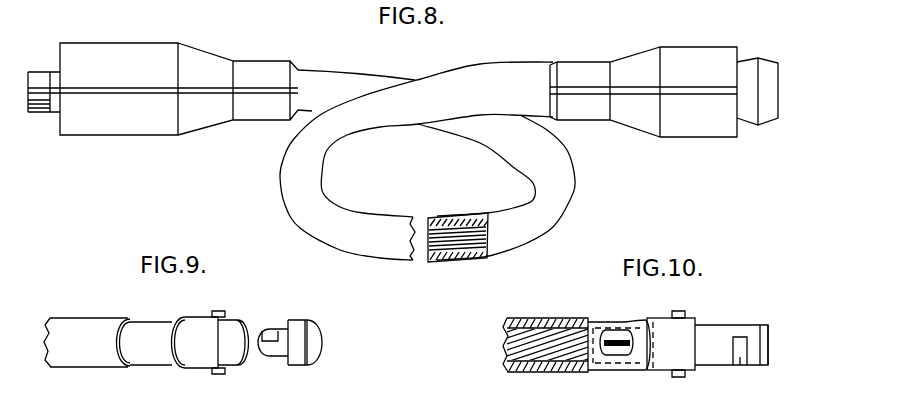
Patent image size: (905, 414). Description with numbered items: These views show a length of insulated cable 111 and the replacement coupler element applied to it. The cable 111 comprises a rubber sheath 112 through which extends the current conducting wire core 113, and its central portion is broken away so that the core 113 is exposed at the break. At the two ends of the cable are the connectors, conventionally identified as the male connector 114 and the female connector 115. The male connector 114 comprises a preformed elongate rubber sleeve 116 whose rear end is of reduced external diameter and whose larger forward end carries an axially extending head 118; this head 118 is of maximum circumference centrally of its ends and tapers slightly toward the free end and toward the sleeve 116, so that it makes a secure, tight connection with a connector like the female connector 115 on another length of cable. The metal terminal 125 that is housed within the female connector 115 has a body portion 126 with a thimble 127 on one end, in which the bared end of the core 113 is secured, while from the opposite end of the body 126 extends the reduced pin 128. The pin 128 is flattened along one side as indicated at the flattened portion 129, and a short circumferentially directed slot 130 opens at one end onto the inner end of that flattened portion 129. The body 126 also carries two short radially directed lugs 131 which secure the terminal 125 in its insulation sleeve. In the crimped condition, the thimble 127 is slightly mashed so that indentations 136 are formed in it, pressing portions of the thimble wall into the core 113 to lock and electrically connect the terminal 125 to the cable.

In FIG. 8, the insulated cable 111 is at (422, 75).
In FIG. 8, the rubber sheath 112 is at (293, 175).
In FIG. 9, the rubber sheath 112 is at (85, 333).
In FIG. 8, the current conducting wire core 113 is at (465, 262).
In FIG. 10, the current conducting wire core 113 is at (505, 345).
In FIG. 8, the male connector 114 is at (643, 96).
In FIG. 8, the female connector 115 is at (130, 55).
In FIG. 8, the rubber sleeve 116 is at (713, 125).
In FIG. 8, the head 118 is at (769, 70).
In FIG. 9, the metal terminal 125 is at (321, 323).
In FIG. 10, the metal terminal 125 is at (733, 322).
In FIG. 9, the body portion 126 is at (195, 365).
In FIG. 10, the body portion 126 is at (668, 360).
In FIG. 9, the thimble 127 is at (157, 357).
In FIG. 10, the thimble 127 is at (598, 358).
In FIG. 9, the reduced pin 128 is at (318, 357).
In FIG. 10, the reduced pin 128 is at (765, 335).
In FIG. 9, the flattened portion 129 is at (280, 350).
In FIG. 9, the slot 130 is at (270, 327).
In FIG. 10, the slot 130 is at (742, 358).
In FIG. 9, the lugs 131 is at (218, 311).
In FIG. 10, the lugs 131 is at (688, 378).
In FIG. 10, the indentations 136 is at (613, 330).